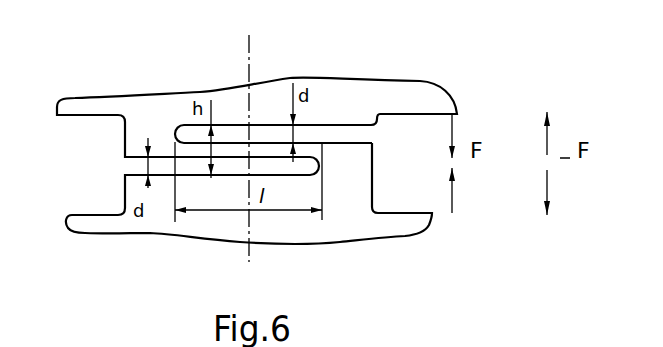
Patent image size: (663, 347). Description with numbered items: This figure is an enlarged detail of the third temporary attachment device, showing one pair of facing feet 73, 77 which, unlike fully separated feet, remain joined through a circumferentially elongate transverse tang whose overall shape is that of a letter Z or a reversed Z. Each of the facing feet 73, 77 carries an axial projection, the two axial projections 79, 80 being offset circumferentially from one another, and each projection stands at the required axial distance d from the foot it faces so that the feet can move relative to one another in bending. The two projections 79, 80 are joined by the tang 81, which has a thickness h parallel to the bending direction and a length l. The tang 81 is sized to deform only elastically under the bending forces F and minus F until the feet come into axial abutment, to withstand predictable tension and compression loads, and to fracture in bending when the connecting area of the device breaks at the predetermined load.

The foot 77 is at (166, 94).
The foot 73 is at (136, 233).
The axial projection 80 is at (137, 139).
The tang 81 is at (262, 140).
The axial projection 79 is at (362, 174).